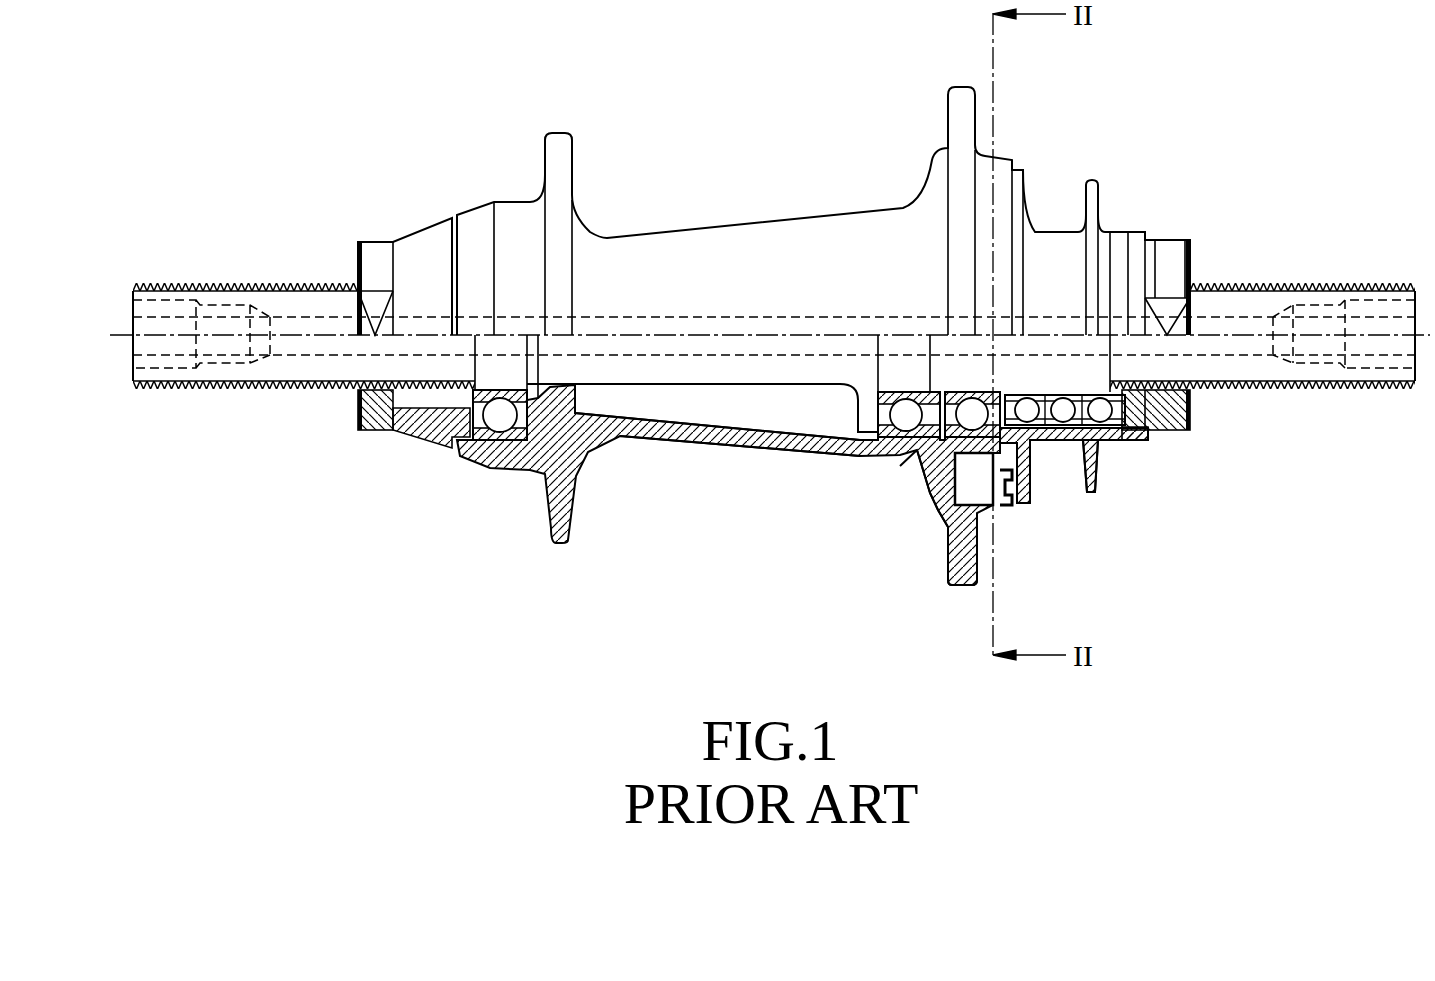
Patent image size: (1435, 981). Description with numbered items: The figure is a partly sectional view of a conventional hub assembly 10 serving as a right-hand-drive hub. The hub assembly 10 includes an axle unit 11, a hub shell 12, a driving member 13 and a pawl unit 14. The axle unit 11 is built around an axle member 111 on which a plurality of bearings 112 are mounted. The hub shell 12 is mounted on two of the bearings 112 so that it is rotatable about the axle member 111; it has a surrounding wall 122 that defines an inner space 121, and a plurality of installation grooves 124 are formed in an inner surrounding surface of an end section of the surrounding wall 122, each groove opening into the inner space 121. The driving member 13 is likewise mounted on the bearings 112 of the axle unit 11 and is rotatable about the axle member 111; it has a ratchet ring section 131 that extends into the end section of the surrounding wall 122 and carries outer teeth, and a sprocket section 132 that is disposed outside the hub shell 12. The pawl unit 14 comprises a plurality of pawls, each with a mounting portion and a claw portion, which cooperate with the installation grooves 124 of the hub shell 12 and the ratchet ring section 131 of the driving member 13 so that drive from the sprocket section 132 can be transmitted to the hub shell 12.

The hub assembly 10 is at (735, 216).
The axle unit 11 is at (217, 388).
The axle member 111 is at (621, 380).
The bearings 112 is at (503, 443).
The hub shell 12 is at (660, 443).
The inner space 121 is at (707, 418).
The surrounding wall 122 is at (773, 447).
The installation grooves 124 is at (925, 497).
The driving member 13 is at (1092, 496).
The ratchet ring section 131 is at (907, 468).
The sprocket section 132 is at (1100, 462).
The pawl unit 14 is at (957, 586).